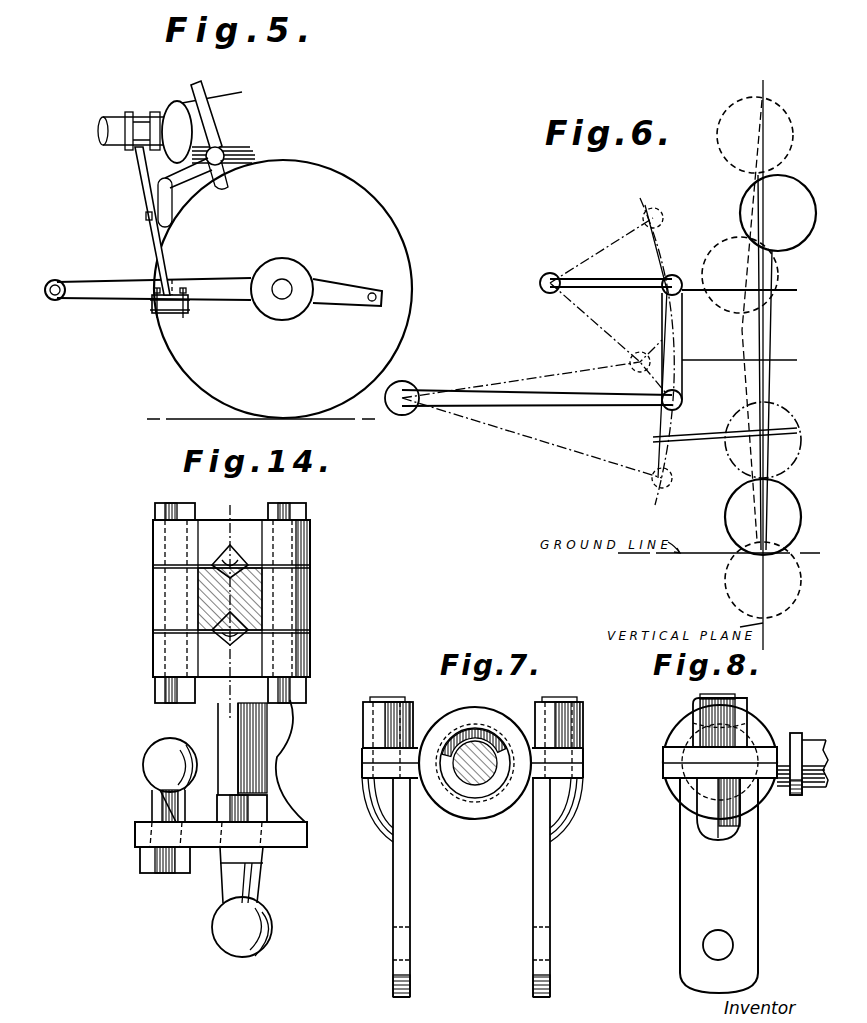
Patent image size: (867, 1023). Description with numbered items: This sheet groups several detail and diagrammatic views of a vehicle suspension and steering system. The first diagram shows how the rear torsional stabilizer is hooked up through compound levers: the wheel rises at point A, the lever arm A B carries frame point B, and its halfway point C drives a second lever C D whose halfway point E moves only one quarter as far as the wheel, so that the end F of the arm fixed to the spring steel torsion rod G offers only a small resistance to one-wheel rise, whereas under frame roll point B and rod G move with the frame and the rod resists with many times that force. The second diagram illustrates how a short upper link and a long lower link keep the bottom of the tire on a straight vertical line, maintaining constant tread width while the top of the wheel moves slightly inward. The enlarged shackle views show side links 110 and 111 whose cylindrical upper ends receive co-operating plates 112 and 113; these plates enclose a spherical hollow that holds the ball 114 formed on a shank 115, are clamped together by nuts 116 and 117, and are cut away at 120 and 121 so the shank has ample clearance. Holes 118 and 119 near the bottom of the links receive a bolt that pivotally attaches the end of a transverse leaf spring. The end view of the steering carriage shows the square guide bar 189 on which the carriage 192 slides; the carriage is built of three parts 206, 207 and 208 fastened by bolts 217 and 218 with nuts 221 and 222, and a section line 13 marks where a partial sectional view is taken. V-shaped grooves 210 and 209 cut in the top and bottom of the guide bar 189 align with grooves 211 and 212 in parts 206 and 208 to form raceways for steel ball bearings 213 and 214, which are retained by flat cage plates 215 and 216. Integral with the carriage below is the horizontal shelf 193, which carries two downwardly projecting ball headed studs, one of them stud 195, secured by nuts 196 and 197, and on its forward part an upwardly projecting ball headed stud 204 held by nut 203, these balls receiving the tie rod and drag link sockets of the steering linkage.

In FIG. 5, the wheel point A is at (280, 292).
In FIG. 5, the frame point B is at (55, 299).
In FIG. 5, the halfway point of lever arm A B C is at (168, 312).
In FIG. 5, the end of lever C D is at (136, 152).
In FIG. 5, the halfway point of lever C D E is at (178, 220).
In FIG. 5, the end of lever arm fixed to torsion rod F is at (150, 197).
In FIG. 5, the spring steel torsion rod G is at (232, 181).
In FIG. 14, the section line 13 is at (225, 509).
In FIG. 14, the guide bar 189 is at (200, 585).
In FIG. 14, the carriage 192 is at (310, 602).
In FIG. 14, the shelf 193 is at (309, 834).
In FIG. 14, the ball headed stud 195 is at (232, 943).
In FIG. 14, the nut 196 is at (262, 885).
In FIG. 14, the nut 197 is at (245, 800).
In FIG. 14, the nut 203 is at (145, 860).
In FIG. 14, the ball headed stud 204 is at (148, 763).
In FIG. 14, the carriage part 206 is at (156, 538).
In FIG. 14, the carriage part 207 is at (155, 603).
In FIG. 14, the carriage part 208 is at (155, 647).
In FIG. 14, the V-shaped groove 209 is at (255, 614).
In FIG. 14, the V-shaped groove 210 is at (262, 575).
In FIG. 14, the V-shaped groove 211 is at (240, 553).
In FIG. 14, the V-shaped groove 212 is at (162, 677).
In FIG. 14, the steel ball bearings 213 is at (225, 554).
In FIG. 14, the steel ball bearings 214 is at (245, 640).
In FIG. 14, the cage 215 is at (312, 565).
In FIG. 14, the cage 216 is at (312, 632).
In FIG. 14, the bolt 217 is at (304, 510).
In FIG. 14, the bolt 218 is at (157, 511).
In FIG. 14, the nut 221 is at (292, 692).
In FIG. 14, the nut 222 is at (170, 790).
In FIG. 7, the side link 110 is at (396, 889).
In FIG. 8, the side link 110 is at (719, 885).
In FIG. 7, the side link 111 is at (548, 894).
In FIG. 7, the plate 112 is at (364, 752).
In FIG. 8, the plate 112 is at (667, 752).
In FIG. 7, the plate 113 is at (366, 773).
In FIG. 8, the plate 113 is at (667, 773).
In FIG. 7, the ball 114 is at (483, 738).
In FIG. 8, the ball 114 is at (693, 790).
In FIG. 7, the shank 115 is at (465, 780).
In FIG. 8, the shank 115 is at (810, 745).
In FIG. 7, the nut 116 is at (405, 718).
In FIG. 8, the nut 116 is at (702, 718).
In FIG. 7, the nut 117 is at (585, 707).
In FIG. 7, the hole 118 is at (396, 932).
In FIG. 8, the hole 118 is at (735, 942).
In FIG. 7, the hole 119 is at (542, 932).
In FIG. 7, the cut-away 120 is at (493, 693).
In FIG. 8, the cut-away 120 is at (752, 728).
In FIG. 7, the cut-away 121 is at (485, 795).
In FIG. 8, the cut-away 121 is at (747, 797).